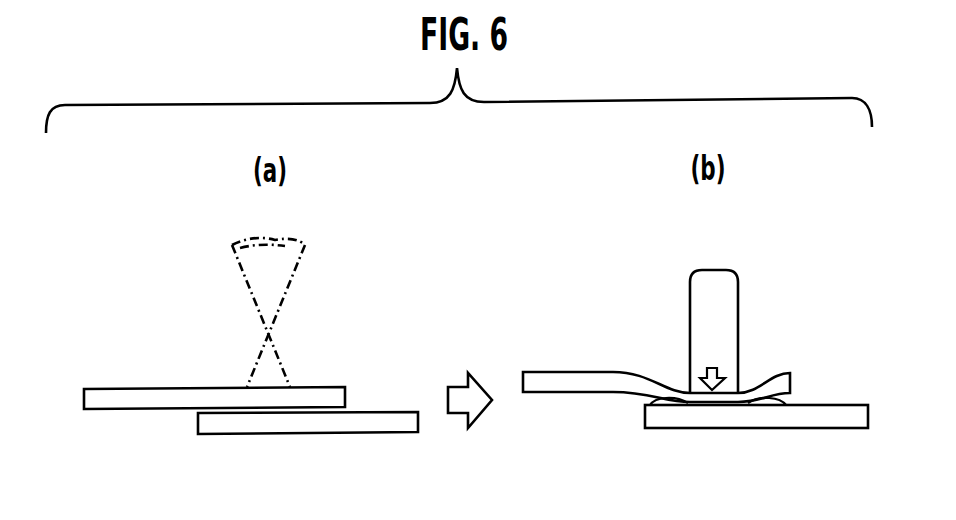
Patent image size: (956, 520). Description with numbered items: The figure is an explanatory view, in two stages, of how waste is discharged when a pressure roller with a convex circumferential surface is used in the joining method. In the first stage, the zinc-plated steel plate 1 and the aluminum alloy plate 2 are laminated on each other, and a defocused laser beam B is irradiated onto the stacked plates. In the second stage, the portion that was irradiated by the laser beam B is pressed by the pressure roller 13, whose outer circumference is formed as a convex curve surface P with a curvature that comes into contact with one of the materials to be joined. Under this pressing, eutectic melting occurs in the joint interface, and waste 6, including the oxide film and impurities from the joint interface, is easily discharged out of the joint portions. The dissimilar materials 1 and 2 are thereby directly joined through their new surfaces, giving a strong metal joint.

The zinc-plated steel plate 1 is at (105, 400).
The aluminum alloy plate 2 is at (400, 422).
The laser beam B is at (292, 277).
The convex curve surface P is at (700, 270).
The pressure roller 13 is at (728, 300).
The waste 6 is at (652, 401).